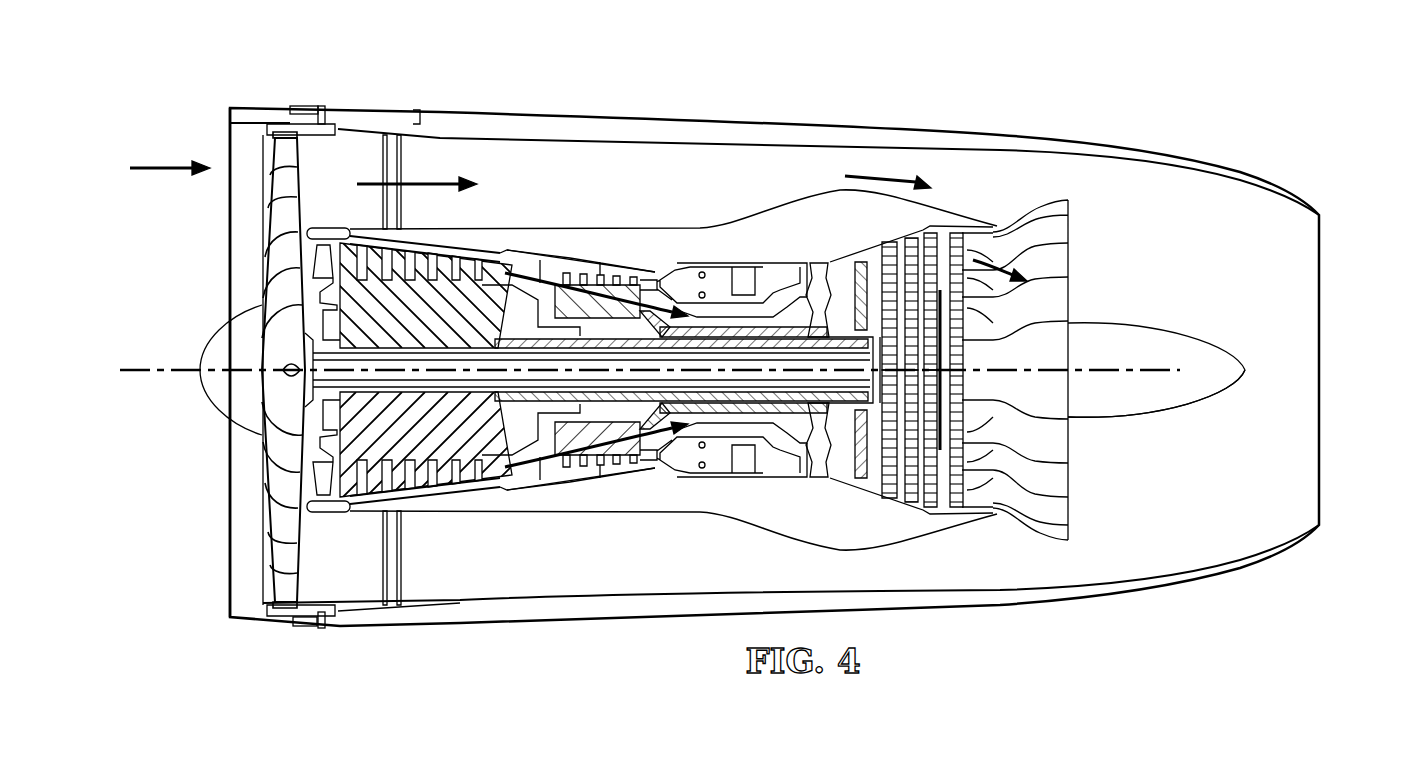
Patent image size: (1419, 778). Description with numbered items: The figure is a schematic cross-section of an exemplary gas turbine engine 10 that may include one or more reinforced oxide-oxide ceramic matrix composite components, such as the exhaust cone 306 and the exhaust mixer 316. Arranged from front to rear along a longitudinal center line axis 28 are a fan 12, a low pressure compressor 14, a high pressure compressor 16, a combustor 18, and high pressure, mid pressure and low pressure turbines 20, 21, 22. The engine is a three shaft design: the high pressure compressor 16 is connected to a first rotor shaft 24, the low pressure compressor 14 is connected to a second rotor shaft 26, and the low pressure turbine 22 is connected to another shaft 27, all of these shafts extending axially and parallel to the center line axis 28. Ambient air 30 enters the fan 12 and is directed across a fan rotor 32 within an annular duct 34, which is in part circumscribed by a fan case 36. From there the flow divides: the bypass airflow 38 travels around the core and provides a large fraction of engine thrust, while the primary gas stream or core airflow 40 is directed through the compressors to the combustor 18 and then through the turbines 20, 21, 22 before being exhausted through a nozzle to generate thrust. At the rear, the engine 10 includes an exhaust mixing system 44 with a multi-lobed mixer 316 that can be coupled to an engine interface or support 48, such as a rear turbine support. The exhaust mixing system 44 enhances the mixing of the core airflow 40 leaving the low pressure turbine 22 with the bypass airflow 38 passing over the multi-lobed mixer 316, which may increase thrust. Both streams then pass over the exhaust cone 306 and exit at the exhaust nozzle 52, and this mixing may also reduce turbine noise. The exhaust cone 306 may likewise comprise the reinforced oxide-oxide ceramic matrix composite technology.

The gas turbine engine 10 is at (846, 69).
The fan 12 is at (200, 540).
The low pressure compressor 14 is at (470, 262).
The high pressure compressor 16 is at (612, 455).
The combustor 18 is at (713, 462).
The high pressure turbine 20 is at (818, 270).
The mid pressure turbine 21 is at (862, 262).
The low pressure turbine 22 is at (930, 233).
The first rotor shaft 24 is at (740, 423).
The second rotor shaft 26 is at (836, 405).
The shaft 27 is at (503, 385).
The longitudinal center line axis 28 is at (1167, 363).
The ambient air 30 is at (165, 166).
The fan rotor 32 is at (293, 523).
The annular duct 34 is at (425, 540).
The fan case 36 is at (345, 628).
The bypass airflow 38 is at (430, 226).
The core airflow 40 is at (570, 264).
The exhaust mixing system 44 is at (1006, 542).
The engine interface or support 48 is at (957, 233).
The exhaust nozzle 52 is at (1360, 245).
The exhaust cone 306 is at (1160, 416).
The multi-lobed mixer 316 is at (1070, 217).